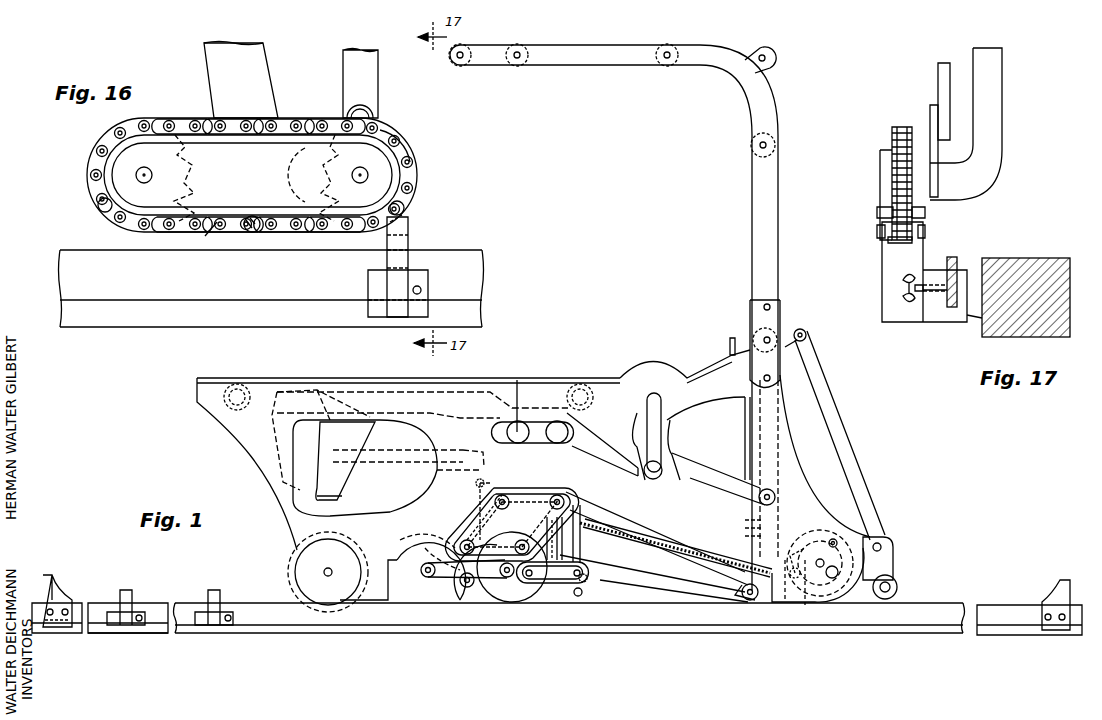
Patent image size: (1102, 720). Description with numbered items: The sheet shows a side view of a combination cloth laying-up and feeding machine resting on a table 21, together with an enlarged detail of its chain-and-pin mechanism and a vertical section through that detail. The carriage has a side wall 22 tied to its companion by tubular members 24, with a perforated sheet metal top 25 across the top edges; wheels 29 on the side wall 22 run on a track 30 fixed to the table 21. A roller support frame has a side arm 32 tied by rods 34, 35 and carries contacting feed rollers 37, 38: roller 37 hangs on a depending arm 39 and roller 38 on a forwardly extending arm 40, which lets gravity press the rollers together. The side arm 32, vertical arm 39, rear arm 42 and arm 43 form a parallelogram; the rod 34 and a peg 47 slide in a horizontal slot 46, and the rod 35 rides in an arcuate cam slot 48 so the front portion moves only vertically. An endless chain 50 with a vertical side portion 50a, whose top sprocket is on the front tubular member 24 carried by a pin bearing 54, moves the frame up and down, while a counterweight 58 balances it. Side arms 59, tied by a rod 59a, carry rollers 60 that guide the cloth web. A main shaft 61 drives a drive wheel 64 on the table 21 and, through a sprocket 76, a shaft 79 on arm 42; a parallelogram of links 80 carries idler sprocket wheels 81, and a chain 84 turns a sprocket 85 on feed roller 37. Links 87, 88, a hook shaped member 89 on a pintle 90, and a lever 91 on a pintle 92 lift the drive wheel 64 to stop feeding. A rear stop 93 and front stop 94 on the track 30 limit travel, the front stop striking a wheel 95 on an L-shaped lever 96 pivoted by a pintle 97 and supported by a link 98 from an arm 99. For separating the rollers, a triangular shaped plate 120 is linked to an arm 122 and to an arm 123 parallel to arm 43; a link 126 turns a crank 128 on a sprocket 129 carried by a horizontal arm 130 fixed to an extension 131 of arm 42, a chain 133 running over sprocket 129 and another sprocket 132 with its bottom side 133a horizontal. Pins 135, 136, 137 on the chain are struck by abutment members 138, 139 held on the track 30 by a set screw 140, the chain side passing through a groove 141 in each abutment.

In FIG. 16, the table 21 is at (306, 322).
In FIG. 17, the table 21 is at (1020, 262).
In FIG. 1, the table 21 is at (157, 634).
In FIG. 1, the side wall 22 is at (300, 498).
In FIG. 1, the tie tubular member 24 is at (225, 405).
In FIG. 1, the perforated sheet metal top 25 is at (472, 380).
In FIG. 1, the wheel 29 is at (290, 572).
In FIG. 16, the track 30 is at (460, 256).
In FIG. 17, the track 30 is at (952, 258).
In FIG. 1, the track 30 is at (278, 634).
In FIG. 1, the side arm 32 is at (683, 470).
In FIG. 1, the rod 34 is at (557, 421).
In FIG. 1, the rod 35 is at (650, 476).
In FIG. 1, the feed roller 37 is at (758, 600).
In FIG. 1, the feed roller 38 is at (838, 606).
In FIG. 1, the downwardly depending arm 39 is at (740, 505).
In FIG. 1, the forwardly extending and downwardly depending arm 40 is at (800, 500).
In FIG. 1, the rear arm 42 is at (575, 470).
In FIG. 1, the arm 43 is at (672, 550).
In FIG. 1, the horizontal slot 46 is at (527, 424).
In FIG. 1, the peg 47 is at (518, 397).
In FIG. 1, the cam slot 48 is at (655, 400).
In FIG. 1, the endless chain 50 is at (782, 397).
In FIG. 1, the side portion 50a is at (745, 454).
In FIG. 1, the pin bearing 54 is at (745, 525).
In FIG. 1, the counterweight 58 is at (335, 488).
In FIG. 1, the side arm 59 is at (774, 232).
In FIG. 1, the rod 59a is at (768, 52).
In FIG. 1, the roller 60 is at (517, 44).
In FIG. 1, the main shaft 61 is at (466, 530).
In FIG. 1, the drive wheel 64 is at (398, 645).
In FIG. 1, the sprocket 76 is at (470, 540).
In FIG. 1, the shaft 79 is at (557, 495).
In FIG. 1, the parallelogram of links 80 is at (530, 500).
In FIG. 1, the idler sprocket wheel 81 is at (503, 495).
In FIG. 1, the chain 84 is at (648, 552).
In FIG. 1, the sprocket 85 is at (791, 552).
In FIG. 1, the link 87 is at (427, 578).
In FIG. 1, the link 88 is at (467, 590).
In FIG. 1, the hook shaped member 89 is at (475, 484).
In FIG. 1, the pintle 90 is at (465, 588).
In FIG. 1, the lever 91 is at (392, 460).
In FIG. 1, the pintle 92 is at (447, 458).
In FIG. 1, the rear stop 93 is at (56, 593).
In FIG. 1, the front stop 94 is at (1060, 590).
In FIG. 1, the wheel 95 is at (897, 587).
In FIG. 1, the L-shaped lever 96 is at (893, 555).
In FIG. 1, the pintle 97 is at (836, 538).
In FIG. 1, the link 98 is at (832, 422).
In FIG. 1, the arm 99 is at (808, 333).
In FIG. 1, the triangular shaped plate 120 is at (786, 591).
In FIG. 1, the arm 122 is at (808, 612).
In FIG. 1, the arm 123 is at (698, 578).
In FIG. 16, the link 126 is at (370, 83).
In FIG. 17, the link 126 is at (940, 74).
In FIG. 1, the link 126 is at (586, 560).
In FIG. 16, the crank 128 is at (410, 144).
In FIG. 17, the crank 128 is at (931, 145).
In FIG. 1, the crank 128 is at (580, 596).
In FIG. 16, the sprocket 129 is at (302, 152).
In FIG. 16, the horizontal arm 130 is at (122, 169).
In FIG. 17, the horizontal arm 130 is at (884, 164).
In FIG. 1, the horizontal arm 130 is at (565, 582).
In FIG. 16, the extension 131 is at (266, 60).
In FIG. 17, the extension 131 is at (993, 90).
In FIG. 1, the extension 131 is at (598, 537).
In FIG. 16, the sprocket 132 is at (200, 165).
In FIG. 16, the chain 133 is at (158, 120).
In FIG. 17, the chain 133 is at (892, 134).
In FIG. 1, the chain 133 is at (590, 578).
In FIG. 16, the bottom side 133a is at (215, 240).
In FIG. 16, the pin 135 is at (99, 208).
In FIG. 16, the pin 136 is at (252, 215).
In FIG. 17, the pin 136 is at (877, 230).
In FIG. 16, the pin 137 is at (405, 207).
In FIG. 17, the pin 137 is at (878, 215).
In FIG. 1, the abutment member 138 is at (125, 590).
In FIG. 16, the bracket 139 is at (405, 250).
In FIG. 17, the bracket 139 is at (888, 276).
In FIG. 1, the bracket 139 is at (212, 590).
In FIG. 16, the set screw 140 is at (424, 290).
In FIG. 17, the set screw 140 is at (903, 288).
In FIG. 16, the groove 141 is at (410, 226).
In FIG. 17, the groove 141 is at (888, 241).